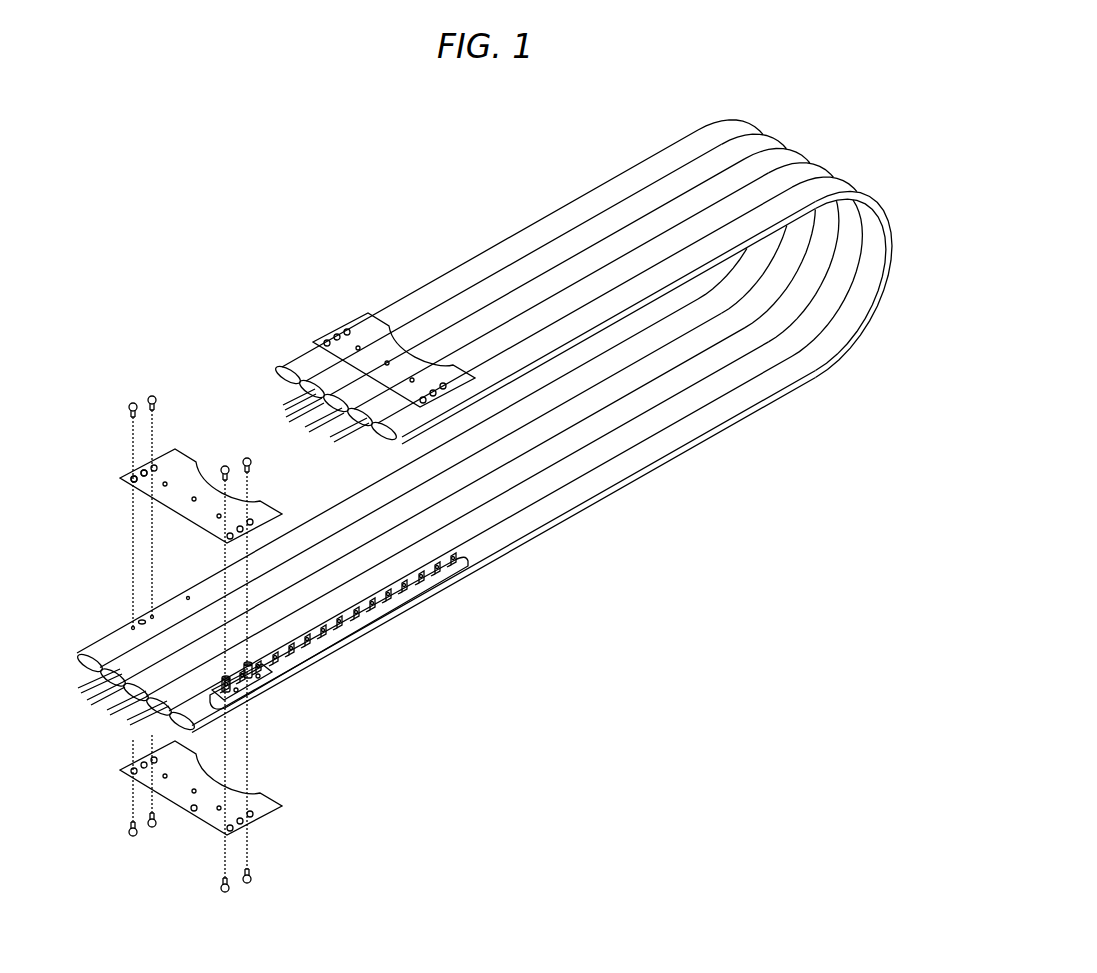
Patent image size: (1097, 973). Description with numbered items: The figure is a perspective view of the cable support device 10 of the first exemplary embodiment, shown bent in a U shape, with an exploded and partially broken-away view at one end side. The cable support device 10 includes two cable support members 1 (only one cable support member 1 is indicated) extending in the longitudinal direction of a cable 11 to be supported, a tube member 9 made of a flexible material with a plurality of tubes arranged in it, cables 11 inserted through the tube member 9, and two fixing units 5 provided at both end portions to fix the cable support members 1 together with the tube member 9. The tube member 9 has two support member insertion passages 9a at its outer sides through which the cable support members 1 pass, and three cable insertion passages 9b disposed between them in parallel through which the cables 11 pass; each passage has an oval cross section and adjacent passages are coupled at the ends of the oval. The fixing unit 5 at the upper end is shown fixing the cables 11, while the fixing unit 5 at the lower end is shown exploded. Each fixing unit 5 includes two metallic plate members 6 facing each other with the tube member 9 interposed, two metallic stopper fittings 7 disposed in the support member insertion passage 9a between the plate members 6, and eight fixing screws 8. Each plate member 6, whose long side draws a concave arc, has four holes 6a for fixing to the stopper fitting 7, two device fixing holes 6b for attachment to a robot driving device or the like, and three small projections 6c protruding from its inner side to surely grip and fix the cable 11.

The cable support member 1 is at (370, 635).
The fixing unit 5 is at (352, 305).
The plate member 6 is at (185, 455).
The hole 6a is at (131, 476).
The device fixing hole 6b is at (140, 466).
The small projection 6c is at (190, 832).
The metallic stopper fitting 7 is at (258, 700).
The fixing screw 8 is at (130, 400).
The tube member 9 is at (103, 640).
The support member insertion passage 9a is at (278, 372).
The cable insertion passage 9b is at (368, 435).
The cable support device 10 is at (685, 505).
The cable 11 is at (283, 392).